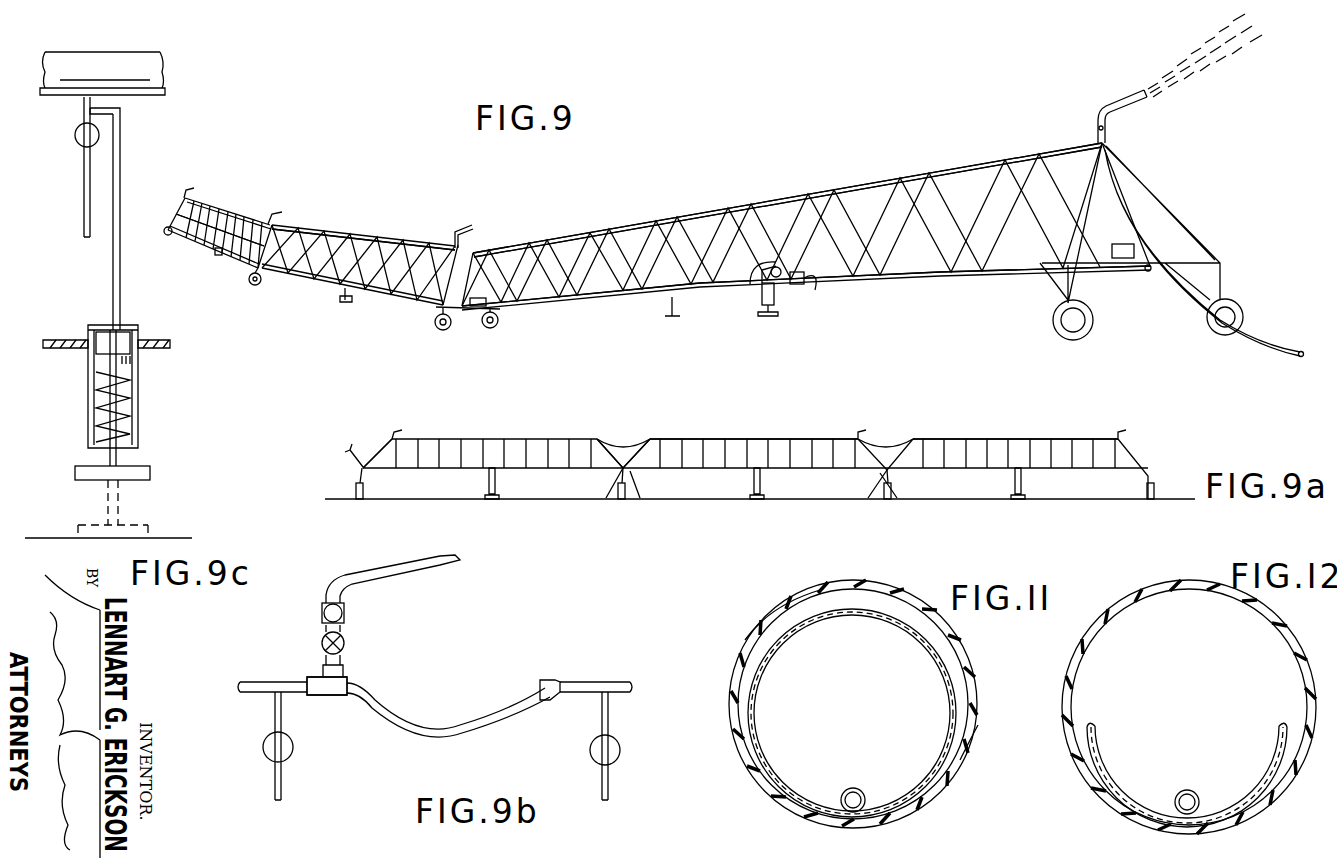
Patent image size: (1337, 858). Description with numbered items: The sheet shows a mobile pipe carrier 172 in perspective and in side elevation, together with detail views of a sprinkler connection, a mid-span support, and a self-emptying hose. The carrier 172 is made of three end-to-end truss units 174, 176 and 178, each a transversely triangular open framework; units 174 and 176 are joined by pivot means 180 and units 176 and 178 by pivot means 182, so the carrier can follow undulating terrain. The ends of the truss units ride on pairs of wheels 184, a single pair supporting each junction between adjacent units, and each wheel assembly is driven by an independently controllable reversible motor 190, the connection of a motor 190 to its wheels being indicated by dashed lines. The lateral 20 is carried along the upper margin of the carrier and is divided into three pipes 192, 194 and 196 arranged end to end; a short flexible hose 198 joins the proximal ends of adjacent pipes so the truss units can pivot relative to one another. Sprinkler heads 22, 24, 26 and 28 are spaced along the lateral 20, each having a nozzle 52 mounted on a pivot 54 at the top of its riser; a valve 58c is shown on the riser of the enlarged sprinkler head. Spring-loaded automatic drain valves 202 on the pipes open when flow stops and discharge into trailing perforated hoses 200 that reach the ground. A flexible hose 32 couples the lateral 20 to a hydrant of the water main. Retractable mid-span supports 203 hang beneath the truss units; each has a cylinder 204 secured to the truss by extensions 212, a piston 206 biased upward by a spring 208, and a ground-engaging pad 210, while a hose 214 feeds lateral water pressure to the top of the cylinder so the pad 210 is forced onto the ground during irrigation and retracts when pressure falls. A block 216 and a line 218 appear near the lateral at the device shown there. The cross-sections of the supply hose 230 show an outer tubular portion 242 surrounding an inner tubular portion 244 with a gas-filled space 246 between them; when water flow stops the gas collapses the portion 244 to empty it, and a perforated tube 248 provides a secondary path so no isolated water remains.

In FIG. 9, the lateral 20 is at (614, 226).
In FIG. 9A, the lateral 20 is at (745, 439).
In FIG. 9C, the lateral 20 is at (160, 55).
In FIG. 9, the sprinkler head 22 is at (1117, 95).
In FIG. 9A, the sprinkler head 22 is at (1122, 439).
In FIG. 9, the sprinkler head 24 is at (466, 226).
In FIG. 9A, the sprinkler head 24 is at (866, 432).
In FIG. 9, the sprinkler head 26 is at (280, 222).
In FIG. 9A, the sprinkler head 26 is at (605, 432).
In FIG. 9B, the sprinkler head 26 is at (408, 594).
In FIG. 9, the sprinkler head 28 is at (187, 195).
In FIG. 9A, the sprinkler head 28 is at (397, 432).
In FIG. 9, the flexible hose 32 is at (1190, 310).
In FIG. 9B, the nozzle 52 is at (448, 562).
In FIG. 9B, the pivot 54 is at (320, 612).
In FIG. 9B, the valve 58c is at (320, 643).
In FIG. 9, the carrier 172 is at (789, 190).
In FIG. 9, the truss unit 174 is at (195, 240).
In FIG. 9A, the truss unit 174 is at (440, 478).
In FIG. 9, the truss unit 176 is at (408, 294).
In FIG. 9A, the truss unit 176 is at (710, 478).
In FIG. 9, the truss unit 178 is at (665, 300).
In FIG. 9A, the truss unit 178 is at (1028, 478).
In FIG. 9A, the pivot means 180 is at (622, 475).
In FIG. 9A, the pivot means 182 is at (884, 475).
In FIG. 9, the wheels 184 is at (258, 284).
In FIG. 9A, the wheels 184 is at (356, 490).
In FIG. 9, the reversible motor 190 is at (490, 312).
In FIG. 9, the pipe 192 is at (228, 226).
In FIG. 9B, the pipe 192 is at (248, 682).
In FIG. 9, the pipe 194 is at (360, 244).
In FIG. 9B, the pipe 194 is at (610, 682).
In FIG. 9, the pipe 196 is at (700, 212).
In FIG. 9A, the flexible hose 198 is at (622, 450).
In FIG. 9B, the flexible hose 198 is at (447, 717).
In FIG. 9C, the perforated hose 200 is at (84, 190).
In FIG. 9B, the perforated hose 200 is at (282, 796).
In FIG. 9C, the valve 202 is at (75, 134).
In FIG. 9B, the valve 202 is at (294, 748).
In FIG. 9, the mid-span support 203 is at (219, 265).
In FIG. 9A, the mid-span support 203 is at (507, 486).
In FIG. 9C, the mid-span support 203 is at (76, 445).
In FIG. 9C, the cylinder 204 is at (92, 420).
In FIG. 9C, the piston 206 is at (102, 362).
In FIG. 9C, the spring 208 is at (130, 400).
In FIG. 9C, the ground-engaging pad 210 is at (80, 530).
In FIG. 9C, the extensions 212 is at (58, 340).
In FIG. 9, the hose 214 is at (760, 290).
In FIG. 9C, the hose 214 is at (113, 250).
In FIG. 9, the block 216 is at (820, 282).
In FIG. 9, the line 218 is at (778, 262).
In FIG. 11, the hose 230 is at (988, 680).
In FIG. 11, the outer tubular portion 242 is at (985, 722).
In FIG. 11, the inner tubular portion 244 is at (935, 655).
In FIG. 12, the inner tubular portion 244 is at (1112, 772).
In FIG. 11, the space 246 is at (765, 607).
In FIG. 12, the space 246 is at (1118, 640).
In FIG. 11, the perforated tube 248 is at (858, 788).
In FIG. 12, the perforated tube 248 is at (1198, 791).